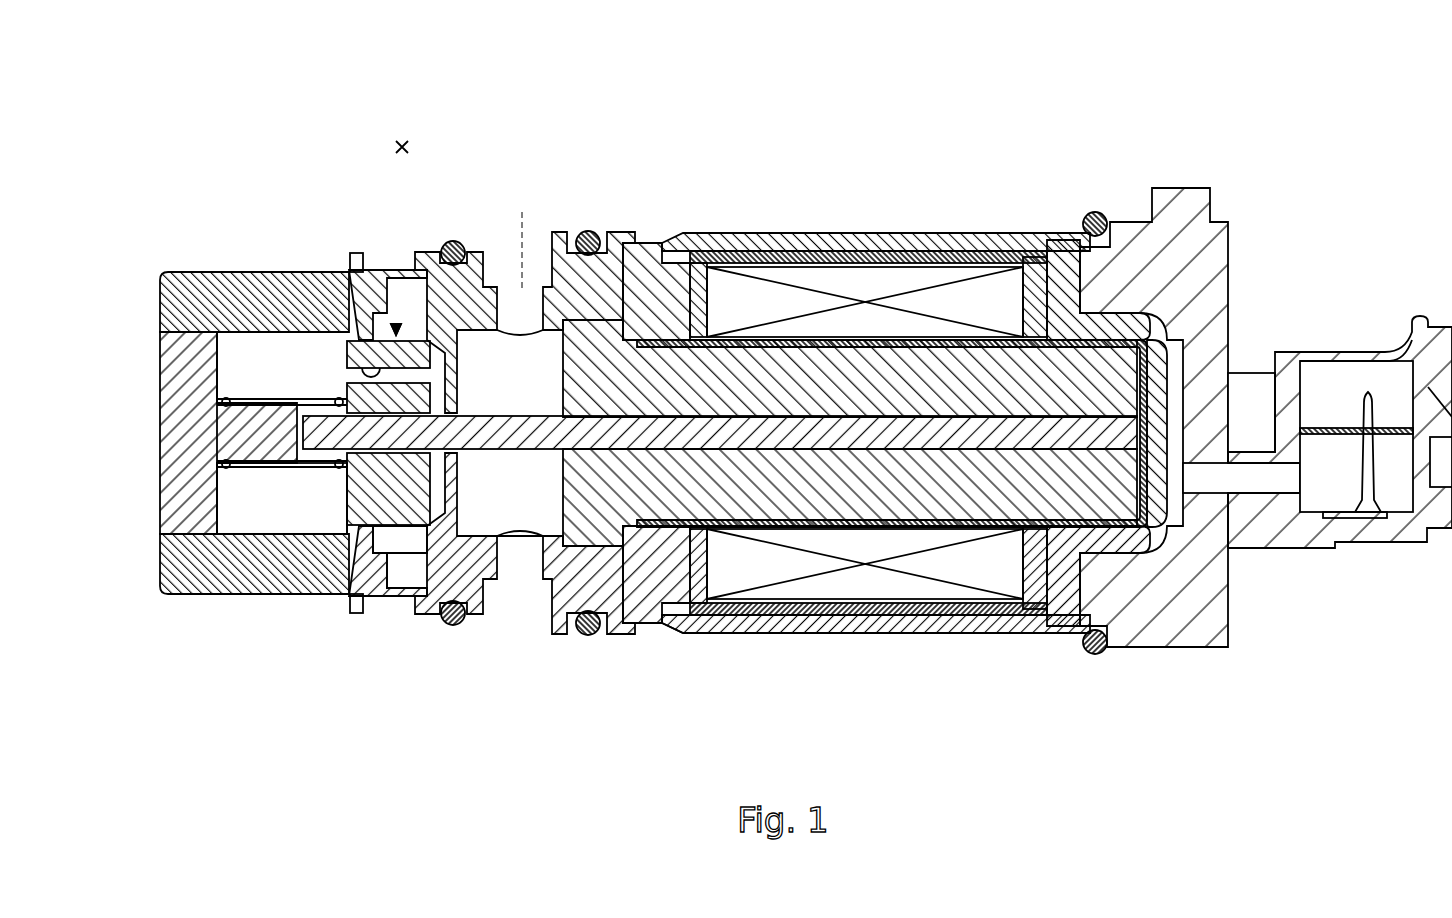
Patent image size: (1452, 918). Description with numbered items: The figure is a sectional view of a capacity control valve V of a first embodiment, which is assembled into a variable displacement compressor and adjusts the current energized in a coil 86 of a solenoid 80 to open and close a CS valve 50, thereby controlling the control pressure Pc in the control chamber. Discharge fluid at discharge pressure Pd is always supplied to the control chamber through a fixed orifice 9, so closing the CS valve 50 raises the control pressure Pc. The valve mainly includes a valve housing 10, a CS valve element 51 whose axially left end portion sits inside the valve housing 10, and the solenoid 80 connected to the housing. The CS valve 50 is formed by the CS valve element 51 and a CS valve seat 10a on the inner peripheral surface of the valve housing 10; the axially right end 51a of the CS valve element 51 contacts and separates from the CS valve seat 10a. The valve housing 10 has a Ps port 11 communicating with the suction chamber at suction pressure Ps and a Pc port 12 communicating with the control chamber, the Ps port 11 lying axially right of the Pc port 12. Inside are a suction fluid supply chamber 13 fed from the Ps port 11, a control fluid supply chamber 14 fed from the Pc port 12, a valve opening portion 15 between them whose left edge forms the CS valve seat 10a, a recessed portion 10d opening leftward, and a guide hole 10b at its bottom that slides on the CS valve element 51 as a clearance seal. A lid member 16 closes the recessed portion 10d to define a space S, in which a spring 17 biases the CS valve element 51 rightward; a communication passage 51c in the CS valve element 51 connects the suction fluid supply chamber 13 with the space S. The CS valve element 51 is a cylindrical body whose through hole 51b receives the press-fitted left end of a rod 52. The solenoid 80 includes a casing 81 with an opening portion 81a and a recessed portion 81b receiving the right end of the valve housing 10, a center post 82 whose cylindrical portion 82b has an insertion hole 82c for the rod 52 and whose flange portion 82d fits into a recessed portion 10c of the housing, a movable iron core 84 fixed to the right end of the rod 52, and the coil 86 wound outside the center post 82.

The fixed orifice 9 is at (402, 147).
The valve housing 10 is at (190, 270).
The CS valve seat 10a is at (455, 560).
The guide hole 10b is at (340, 510).
The recessed portion 10c is at (585, 232).
The recessed portion 10d is at (230, 338).
The Ps port 11 is at (512, 287).
The Pc port 12 is at (395, 275).
The suction fluid supply chamber 13 is at (590, 612).
The control fluid supply chamber 14 is at (404, 540).
The valve opening portion 15 is at (483, 490).
The lid member 16 is at (186, 463).
The spring 17 is at (338, 360).
The CS valve 50 is at (508, 716).
The CS valve element 51 is at (430, 290).
The axially right end 51a is at (440, 526).
The through hole 51b is at (383, 505).
The communication passage 51c is at (343, 388).
The rod 52 is at (708, 427).
The solenoid 80 is at (1018, 140).
The casing 81 is at (620, 648).
The opening portion 81a is at (702, 636).
The recessed portion 81b is at (683, 636).
The center post 82 is at (868, 330).
The cylindrical portion 82b is at (905, 370).
The insertion hole 82c is at (776, 430).
The flange portion 82d is at (643, 262).
The movable iron core 84 is at (1025, 480).
The coil 86 is at (895, 592).
The space S is at (253, 512).
The capacity control valve V is at (1248, 130).
The discharge pressure Pd is at (403, 325).
The control pressure Pc is at (407, 258).
The suction pressure Ps is at (525, 234).